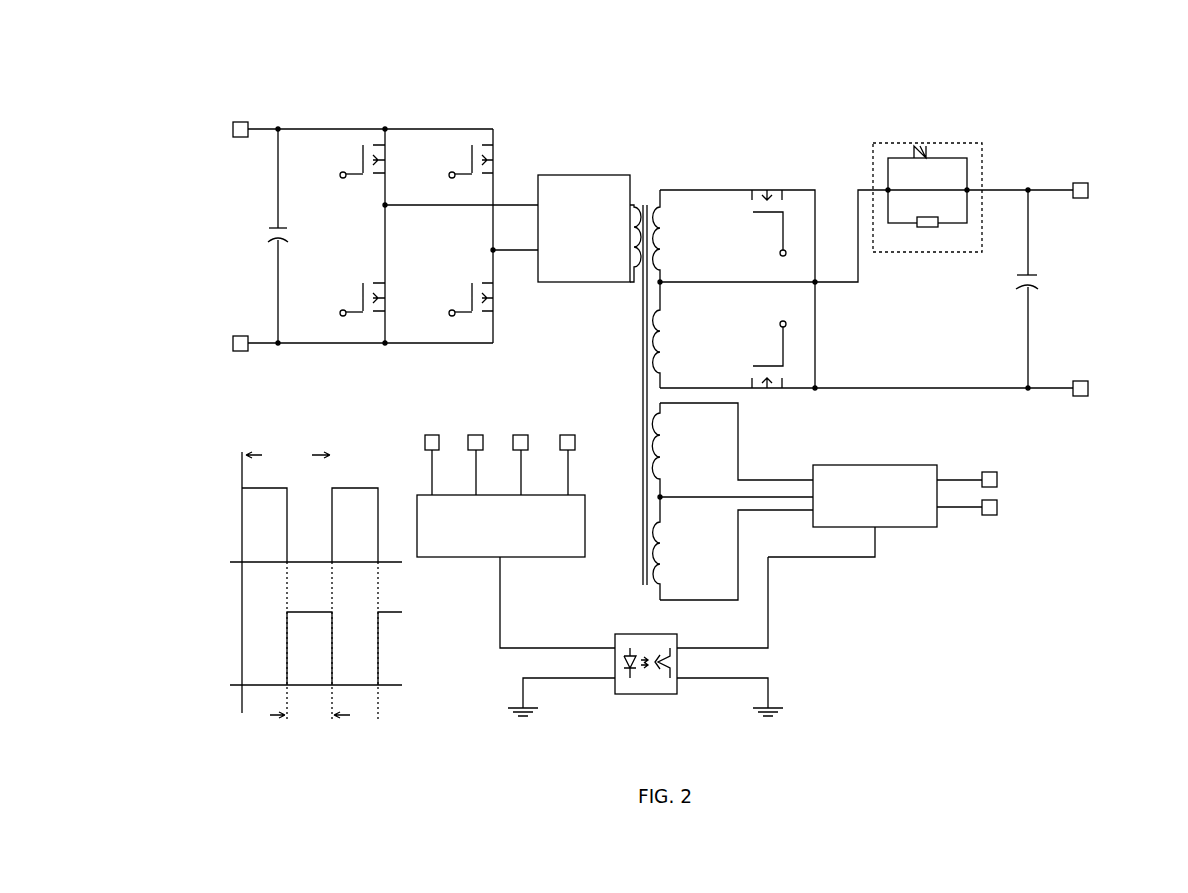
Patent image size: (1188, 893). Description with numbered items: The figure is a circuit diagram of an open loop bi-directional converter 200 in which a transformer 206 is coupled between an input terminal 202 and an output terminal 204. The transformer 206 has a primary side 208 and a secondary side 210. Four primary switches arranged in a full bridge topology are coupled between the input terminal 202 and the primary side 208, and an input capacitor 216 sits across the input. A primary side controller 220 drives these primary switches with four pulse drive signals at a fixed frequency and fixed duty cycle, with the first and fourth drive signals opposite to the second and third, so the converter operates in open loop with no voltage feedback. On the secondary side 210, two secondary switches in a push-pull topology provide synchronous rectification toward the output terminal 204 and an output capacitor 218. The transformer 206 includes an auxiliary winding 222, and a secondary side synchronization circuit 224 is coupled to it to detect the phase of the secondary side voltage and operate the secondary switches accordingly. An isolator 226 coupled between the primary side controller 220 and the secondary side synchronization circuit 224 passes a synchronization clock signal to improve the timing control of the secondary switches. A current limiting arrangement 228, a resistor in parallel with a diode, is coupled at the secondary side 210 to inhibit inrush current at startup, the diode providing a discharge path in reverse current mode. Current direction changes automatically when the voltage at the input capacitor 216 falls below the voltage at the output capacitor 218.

The open loop bi-directional converter 200 is at (896, 52).
The input terminal 202 is at (231, 121).
The output terminal 204 is at (1078, 182).
The transformer 206 is at (651, 166).
The primary side 208 is at (583, 170).
The secondary side 210 is at (713, 189).
The input capacitor 216 is at (259, 233).
The output capacitor 218 is at (1010, 277).
The primary side controller 220 is at (488, 563).
The auxiliary winding 222 is at (670, 464).
The secondary side synchronization circuit 224 is at (923, 532).
The isolator 226 is at (611, 685).
The current limiting arrangement 228 is at (934, 259).